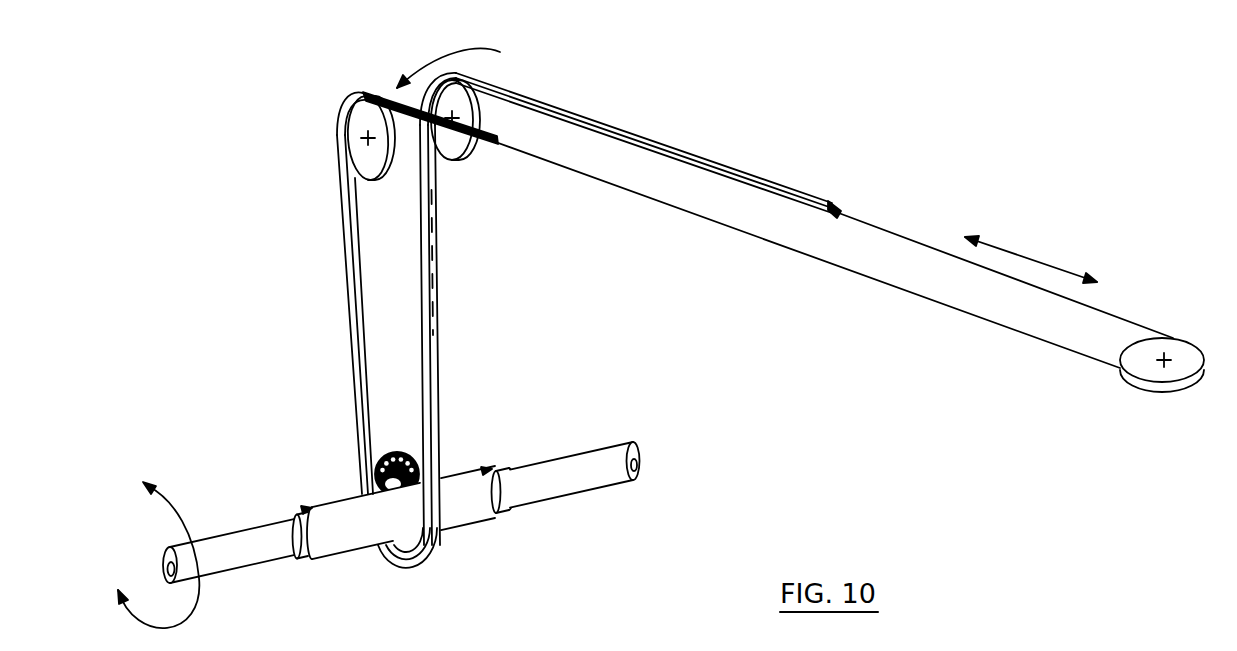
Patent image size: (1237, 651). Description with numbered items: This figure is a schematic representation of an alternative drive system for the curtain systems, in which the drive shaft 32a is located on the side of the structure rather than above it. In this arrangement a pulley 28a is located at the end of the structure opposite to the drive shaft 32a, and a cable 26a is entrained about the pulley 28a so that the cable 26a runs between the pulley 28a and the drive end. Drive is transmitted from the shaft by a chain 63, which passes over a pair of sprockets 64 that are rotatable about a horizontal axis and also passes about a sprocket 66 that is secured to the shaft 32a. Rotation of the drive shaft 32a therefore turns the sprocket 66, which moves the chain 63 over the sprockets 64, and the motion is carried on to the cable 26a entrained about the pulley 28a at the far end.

The cable 26a is at (862, 220).
The pulley 28a is at (1157, 372).
The drive shaft 32a is at (552, 475).
The chain 63 is at (438, 266).
The sprockets 64 is at (482, 73).
The sprocket 66 is at (432, 556).